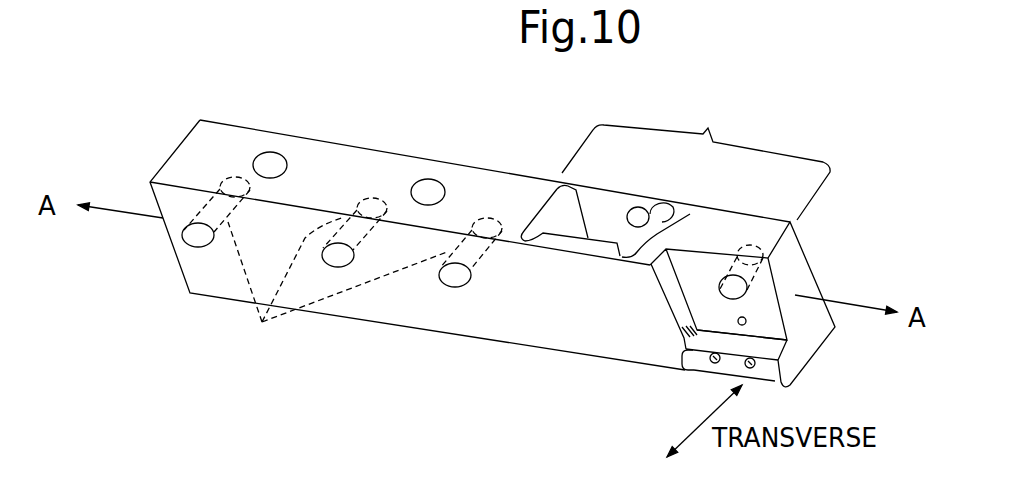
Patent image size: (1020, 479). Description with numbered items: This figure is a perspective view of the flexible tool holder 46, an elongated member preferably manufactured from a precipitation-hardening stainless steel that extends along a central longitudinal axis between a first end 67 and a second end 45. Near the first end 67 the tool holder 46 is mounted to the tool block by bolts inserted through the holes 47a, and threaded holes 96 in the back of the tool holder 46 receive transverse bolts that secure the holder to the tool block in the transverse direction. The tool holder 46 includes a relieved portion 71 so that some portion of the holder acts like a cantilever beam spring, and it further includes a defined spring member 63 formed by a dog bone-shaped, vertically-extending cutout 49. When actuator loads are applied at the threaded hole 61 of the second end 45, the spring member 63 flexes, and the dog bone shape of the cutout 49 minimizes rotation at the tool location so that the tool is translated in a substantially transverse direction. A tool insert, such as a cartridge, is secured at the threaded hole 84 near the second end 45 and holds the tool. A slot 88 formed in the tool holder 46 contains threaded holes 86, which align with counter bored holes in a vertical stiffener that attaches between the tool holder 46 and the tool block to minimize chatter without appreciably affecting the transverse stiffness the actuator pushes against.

The second end 45 is at (793, 360).
The tool holder 46 is at (180, 272).
The holes 47a is at (266, 158).
The cutout 49 is at (690, 214).
The threaded hole 61 is at (757, 280).
The spring member 63 is at (643, 198).
The first end 67 is at (213, 147).
The relieved portion 71 is at (696, 160).
The threaded hole 84 is at (745, 323).
The threaded holes 86 is at (742, 370).
The slot 88 is at (683, 370).
The threaded holes 96 is at (342, 270).